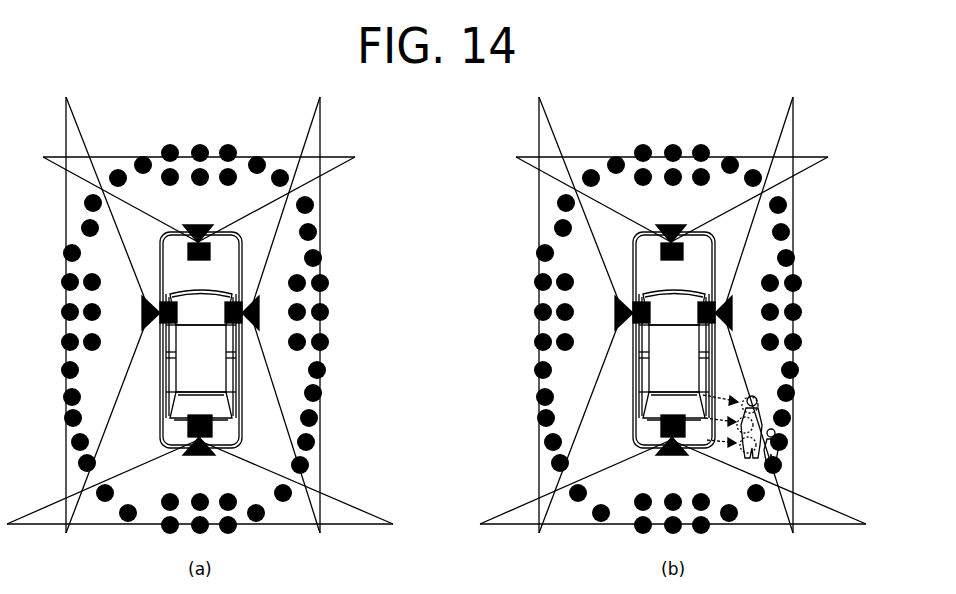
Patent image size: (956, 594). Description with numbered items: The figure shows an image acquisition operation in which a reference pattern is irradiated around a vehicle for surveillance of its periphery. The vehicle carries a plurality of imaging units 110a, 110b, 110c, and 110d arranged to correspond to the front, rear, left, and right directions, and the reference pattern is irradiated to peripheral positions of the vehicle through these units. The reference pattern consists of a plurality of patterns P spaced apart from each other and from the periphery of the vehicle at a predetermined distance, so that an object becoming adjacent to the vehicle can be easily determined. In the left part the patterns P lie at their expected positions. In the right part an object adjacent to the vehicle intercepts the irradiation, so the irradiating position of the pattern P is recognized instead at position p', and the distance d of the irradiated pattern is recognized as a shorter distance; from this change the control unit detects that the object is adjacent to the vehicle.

The imaging unit 110a is at (206, 226).
The imaging unit 110b is at (262, 318).
The imaging unit 110c is at (203, 456).
The imaging unit 110d is at (139, 315).
The pattern P is at (322, 418).
The distance of the irradiated pattern d is at (727, 394).
The recognized irradiating position of the pattern p' is at (749, 402).